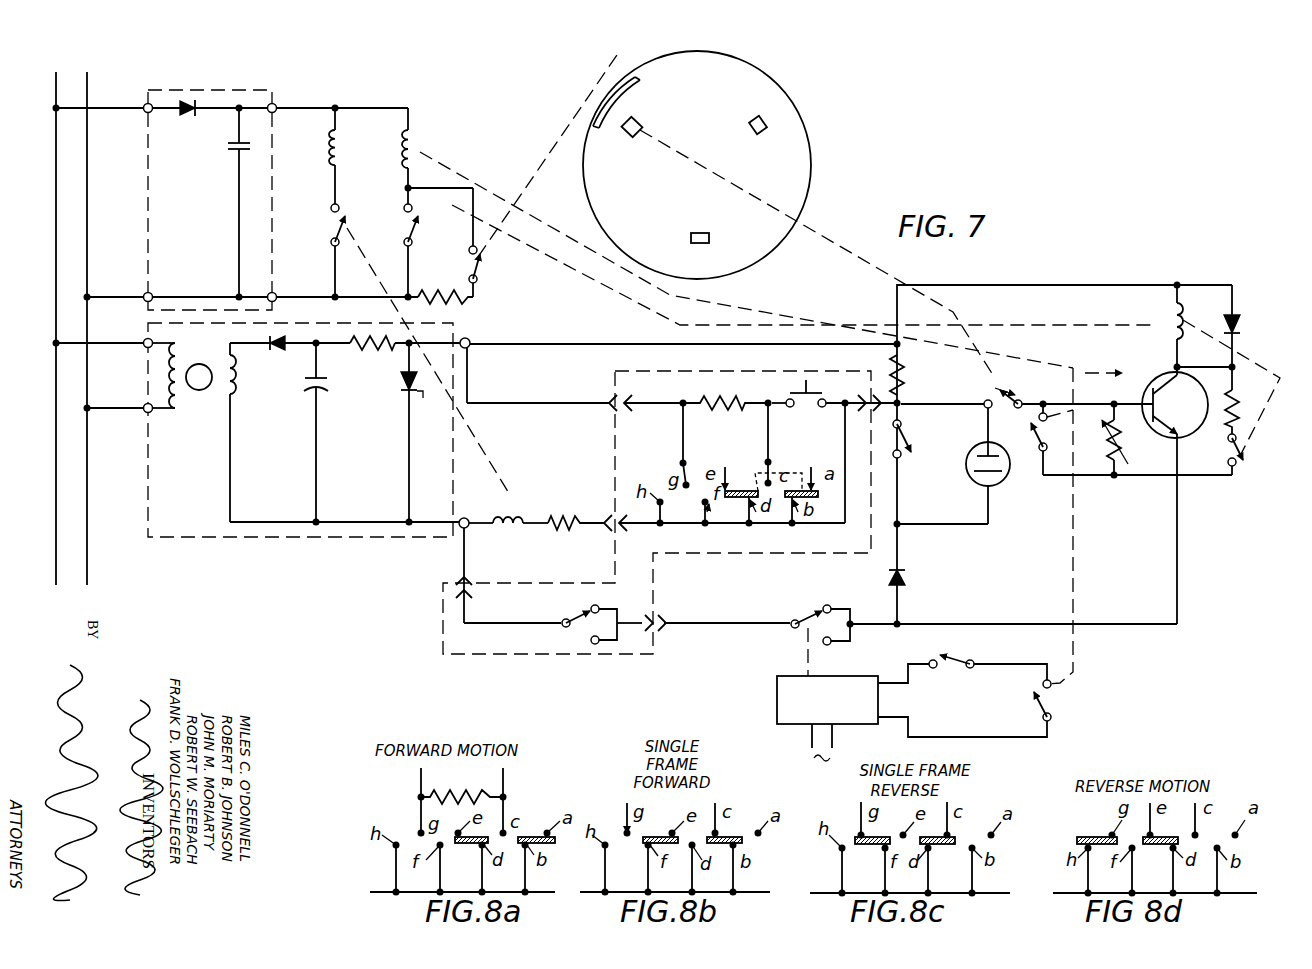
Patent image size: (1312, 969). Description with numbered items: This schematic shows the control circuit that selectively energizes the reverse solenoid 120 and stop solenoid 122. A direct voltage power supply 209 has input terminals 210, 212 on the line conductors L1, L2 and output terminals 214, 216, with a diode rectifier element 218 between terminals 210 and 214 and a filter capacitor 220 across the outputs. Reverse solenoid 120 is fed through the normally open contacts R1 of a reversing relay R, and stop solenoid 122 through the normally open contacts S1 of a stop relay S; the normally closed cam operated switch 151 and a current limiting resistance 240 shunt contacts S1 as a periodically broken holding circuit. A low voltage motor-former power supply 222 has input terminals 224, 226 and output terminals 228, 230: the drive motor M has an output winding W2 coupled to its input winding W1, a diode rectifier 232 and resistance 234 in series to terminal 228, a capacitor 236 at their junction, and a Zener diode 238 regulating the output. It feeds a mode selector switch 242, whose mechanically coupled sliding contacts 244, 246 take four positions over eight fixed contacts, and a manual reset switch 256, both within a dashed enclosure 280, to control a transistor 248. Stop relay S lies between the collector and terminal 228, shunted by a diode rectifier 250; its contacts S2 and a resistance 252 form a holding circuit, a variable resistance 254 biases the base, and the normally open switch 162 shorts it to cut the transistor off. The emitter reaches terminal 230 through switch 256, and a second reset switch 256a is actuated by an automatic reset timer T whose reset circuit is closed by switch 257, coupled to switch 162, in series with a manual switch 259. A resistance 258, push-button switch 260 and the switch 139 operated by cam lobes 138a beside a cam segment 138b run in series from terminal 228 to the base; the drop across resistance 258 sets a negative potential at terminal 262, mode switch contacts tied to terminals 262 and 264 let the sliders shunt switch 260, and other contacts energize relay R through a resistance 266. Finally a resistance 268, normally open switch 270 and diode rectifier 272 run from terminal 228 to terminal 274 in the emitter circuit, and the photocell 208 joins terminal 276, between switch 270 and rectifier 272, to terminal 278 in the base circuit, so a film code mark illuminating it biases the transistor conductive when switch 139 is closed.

In FIG. 7, the line voltage conductor L1 is at (52, 318).
In FIG. 7, the line voltage conductor L2 is at (90, 318).
In FIG. 7, the direct voltage power supply 209 is at (205, 90).
In FIG. 7, the input terminal 210 is at (144, 104).
In FIG. 7, the input terminal 212 is at (151, 293).
In FIG. 7, the direct voltage output terminal 214 is at (275, 104).
In FIG. 7, the direct voltage output terminal 216 is at (275, 293).
In FIG. 7, the diode rectifier element 218 is at (184, 115).
In FIG. 7, the filter capacitor 220 is at (234, 150).
In FIG. 7, the reverse solenoid 120 is at (340, 140).
In FIG. 7, the stop solenoid 122 is at (415, 142).
In FIG. 7, the normally open switch contacts of reversing relay R1 is at (345, 224).
In FIG. 7, the normally open switch contacts of stop relay S1 is at (418, 226).
In FIG. 7, the current limiting resistance 240 is at (432, 283).
In FIG. 7, the normally closed cam operated switch 151 is at (480, 268).
In FIG. 7, the cam lobes 138a is at (638, 124).
In FIG. 7, the shutter arc segment 138b is at (638, 86).
In FIG. 7, the low voltage power supply 222 is at (297, 540).
In FIG. 7, the input terminal 224 is at (144, 340).
In FIG. 7, the input terminal 226 is at (144, 411).
In FIG. 7, the output terminal 228 is at (470, 340).
In FIG. 7, the output terminal 230 is at (466, 516).
In FIG. 7, the diode rectifier 232 is at (275, 352).
In FIG. 7, the resistance 234 is at (370, 350).
In FIG. 7, the capacitor 236 is at (322, 388).
In FIG. 7, the Zener diode 238 is at (400, 395).
In FIG. 7, the motor input winding W1 is at (178, 412).
In FIG. 7, the output winding W2 is at (236, 392).
In FIG. 7, the alternating current projector drive motor M is at (199, 377).
In FIG. 7, the reversing relay R is at (514, 517).
In FIG. 7, the resistance 266 is at (560, 516).
In FIG. 7, the manually operative reset switch 256 is at (574, 620).
In FIG. 7, the second reset switch 256a is at (802, 620).
In FIG. 7, the relay unit 280 is at (686, 554).
In FIG. 7, the resistance 258 is at (704, 398).
In FIG. 7, the push-button switch 260 is at (798, 388).
In FIG. 7, the terminal 262 is at (766, 398).
In FIG. 7, the terminal 264 is at (845, 404).
In FIG. 7, the mode selector switch 242 is at (775, 450).
In FIG. 7, the sliding contact 244 is at (740, 490).
In FIG. 8A, the sliding contact 244 is at (458, 844).
In FIG. 8B, the sliding contact 244 is at (645, 844).
In FIG. 8C, the sliding contact 244 is at (857, 846).
In FIG. 8D, the sliding contact 244 is at (1080, 838).
In FIG. 7, the sliding contact 246 is at (813, 500).
In FIG. 8A, the sliding contact 246 is at (553, 845).
In FIG. 8B, the sliding contact 246 is at (742, 844).
In FIG. 8C, the sliding contact 246 is at (940, 846).
In FIG. 8D, the sliding contact 246 is at (1146, 846).
In FIG. 7, the resistance 268 is at (905, 368).
In FIG. 7, the normally open manually operative switch 270 is at (905, 436).
In FIG. 7, the diode rectifier 272 is at (906, 578).
In FIG. 7, the terminal 274 is at (900, 627).
In FIG. 7, the terminal 276 is at (902, 528).
In FIG. 7, the terminal 278 is at (985, 400).
In FIG. 7, the switch 139 is at (1016, 380).
In FIG. 7, the photocell 208 is at (975, 482).
In FIG. 7, the normally open switch 162 is at (1048, 450).
In FIG. 7, the transistor 248 is at (1133, 386).
In FIG. 7, the diode rectifier 250 is at (1240, 325).
In FIG. 7, the resistance 252 is at (1242, 408).
In FIG. 7, the variable resistance 254 is at (1118, 462).
In FIG. 7, the stop relay S is at (1172, 318).
In FIG. 7, the normally open switch contacts of stop relay S2 is at (1244, 459).
In FIG. 7, the normally open switch 257 is at (1052, 712).
In FIG. 7, the manually operative switch 259 is at (956, 662).
In FIG. 7, the automatic reset timer T is at (777, 703).